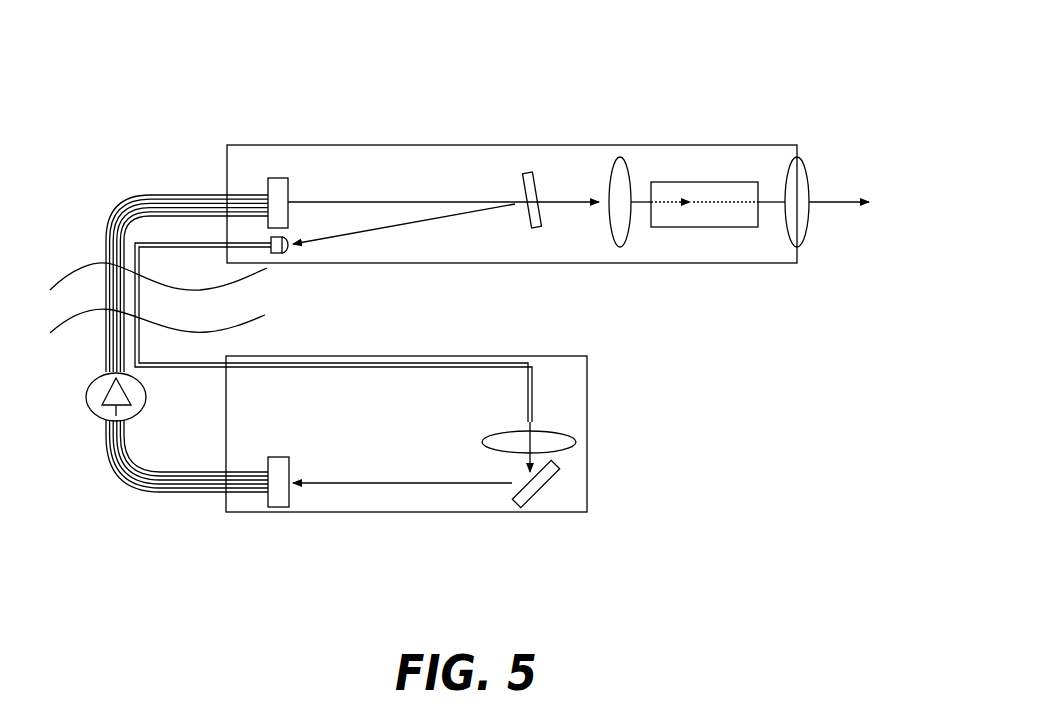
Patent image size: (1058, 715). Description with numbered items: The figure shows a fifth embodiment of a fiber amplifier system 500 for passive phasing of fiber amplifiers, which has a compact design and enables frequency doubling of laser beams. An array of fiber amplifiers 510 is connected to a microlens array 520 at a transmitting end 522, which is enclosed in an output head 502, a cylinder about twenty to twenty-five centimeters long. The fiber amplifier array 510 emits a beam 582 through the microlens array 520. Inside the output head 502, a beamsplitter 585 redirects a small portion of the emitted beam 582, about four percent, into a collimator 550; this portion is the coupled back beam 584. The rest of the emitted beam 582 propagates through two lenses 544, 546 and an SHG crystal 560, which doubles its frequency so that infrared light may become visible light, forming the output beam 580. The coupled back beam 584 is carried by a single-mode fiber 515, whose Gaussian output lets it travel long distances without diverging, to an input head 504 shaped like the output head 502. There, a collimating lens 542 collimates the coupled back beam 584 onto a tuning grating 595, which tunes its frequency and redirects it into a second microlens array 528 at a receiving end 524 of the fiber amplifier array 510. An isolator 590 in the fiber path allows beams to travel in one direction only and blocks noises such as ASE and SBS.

The fiber amplifier system 500 is at (694, 80).
The output head 502 is at (570, 145).
The input head 504 is at (487, 513).
The fiber amplifier array 510 is at (169, 189).
The single-mode fiber 515 is at (538, 398).
The microlens array 520 is at (272, 175).
The transmitting end 522 is at (284, 175).
The receiving end 524 is at (288, 510).
The microlens array 528 is at (275, 510).
The collimating lens 542 is at (573, 447).
The lens 544 is at (626, 182).
The lens 546 is at (807, 167).
The collimator 550 is at (281, 258).
The SHG crystal 560 is at (736, 180).
The output beam 580 is at (822, 205).
The emitted beam 582 is at (452, 198).
The coupled back beam 584 is at (450, 216).
The beamsplitter 585 is at (551, 227).
The isolator 590 is at (95, 413).
The tuning grating 595 is at (558, 481).